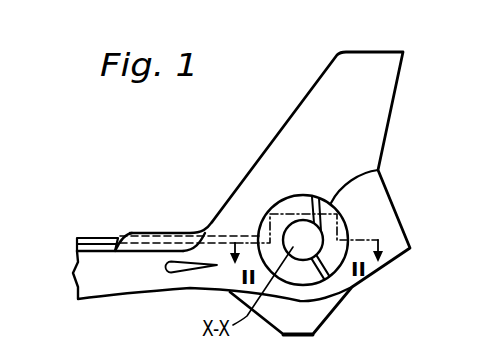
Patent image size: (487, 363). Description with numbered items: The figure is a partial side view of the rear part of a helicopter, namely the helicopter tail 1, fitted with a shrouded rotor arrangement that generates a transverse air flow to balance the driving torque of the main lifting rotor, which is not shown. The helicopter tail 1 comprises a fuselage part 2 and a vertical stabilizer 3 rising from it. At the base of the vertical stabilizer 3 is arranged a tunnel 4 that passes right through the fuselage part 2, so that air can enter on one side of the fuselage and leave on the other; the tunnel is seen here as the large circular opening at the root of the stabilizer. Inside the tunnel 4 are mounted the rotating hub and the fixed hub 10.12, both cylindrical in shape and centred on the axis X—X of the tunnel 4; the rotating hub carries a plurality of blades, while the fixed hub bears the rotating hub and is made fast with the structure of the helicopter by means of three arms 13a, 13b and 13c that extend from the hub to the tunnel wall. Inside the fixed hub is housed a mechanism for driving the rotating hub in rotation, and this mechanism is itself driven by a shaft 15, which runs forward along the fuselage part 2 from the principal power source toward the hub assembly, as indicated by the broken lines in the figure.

The helicopter tail 1 is at (189, 195).
The fuselage part 2 is at (125, 290).
The vertical stabilizer 3 is at (388, 90).
The tunnel 4 is at (332, 222).
The rotating hub and fixed hub 10.12 is at (313, 245).
The arm 13a is at (273, 203).
The arm 13b is at (379, 171).
The arm 13c is at (322, 320).
The shaft 15 is at (92, 240).